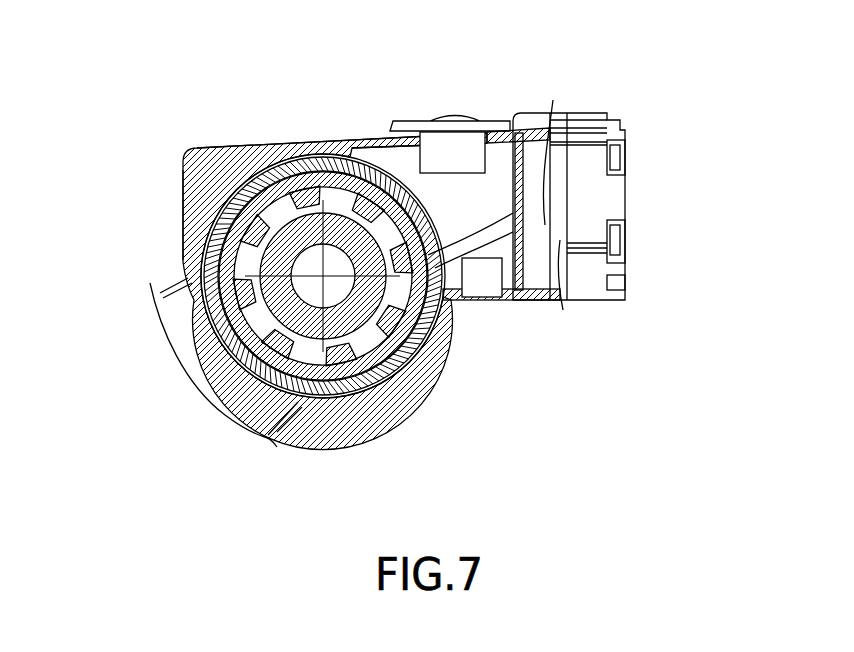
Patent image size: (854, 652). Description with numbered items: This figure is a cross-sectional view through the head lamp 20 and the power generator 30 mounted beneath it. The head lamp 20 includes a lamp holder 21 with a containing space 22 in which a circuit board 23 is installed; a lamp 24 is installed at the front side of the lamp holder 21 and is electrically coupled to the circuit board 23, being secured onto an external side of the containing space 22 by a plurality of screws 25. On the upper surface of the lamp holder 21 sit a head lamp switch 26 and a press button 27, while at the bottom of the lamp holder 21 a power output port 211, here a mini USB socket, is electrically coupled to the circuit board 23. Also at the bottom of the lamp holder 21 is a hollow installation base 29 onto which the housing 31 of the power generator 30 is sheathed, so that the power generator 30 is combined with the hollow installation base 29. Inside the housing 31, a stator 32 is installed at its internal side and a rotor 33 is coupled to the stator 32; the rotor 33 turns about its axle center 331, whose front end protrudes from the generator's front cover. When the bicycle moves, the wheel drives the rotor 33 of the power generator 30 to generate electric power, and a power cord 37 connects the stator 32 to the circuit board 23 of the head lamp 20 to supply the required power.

The head lamp 20 is at (245, 125).
The lamp holder 21 is at (305, 138).
The containing space 22 is at (545, 222).
The circuit board 23 is at (508, 130).
The lamp 24 is at (588, 150).
The screws 25 is at (628, 150).
The head lamp switch 26 is at (430, 148).
The press button 27 is at (453, 115).
The hollow installation base 29 is at (430, 368).
The power generator 30 is at (420, 385).
The housing 31 is at (200, 150).
The stator 32 is at (222, 212).
The rotor 33 is at (375, 400).
The axle center 331 is at (328, 400).
The power cord 37 is at (472, 235).
The power output port 211 is at (483, 280).